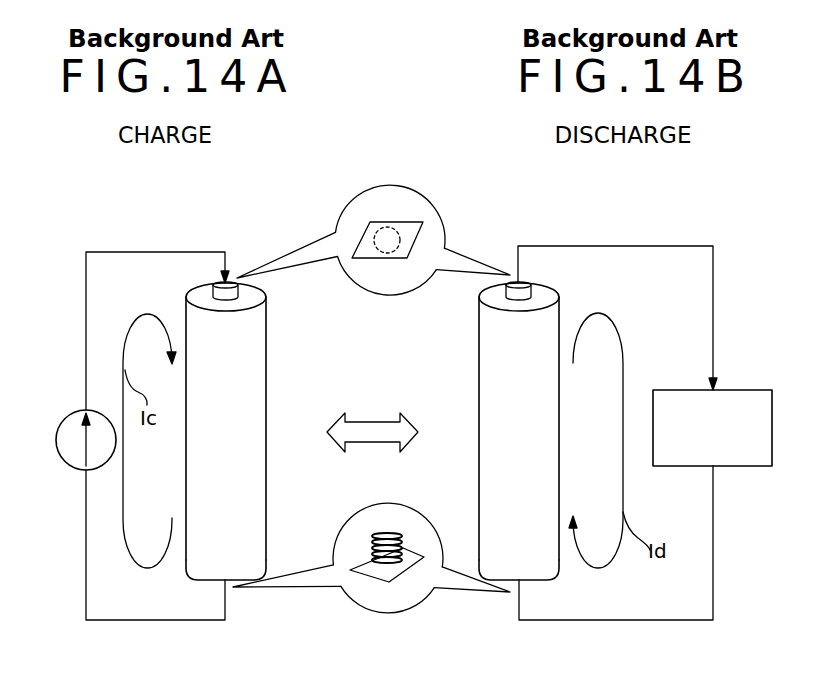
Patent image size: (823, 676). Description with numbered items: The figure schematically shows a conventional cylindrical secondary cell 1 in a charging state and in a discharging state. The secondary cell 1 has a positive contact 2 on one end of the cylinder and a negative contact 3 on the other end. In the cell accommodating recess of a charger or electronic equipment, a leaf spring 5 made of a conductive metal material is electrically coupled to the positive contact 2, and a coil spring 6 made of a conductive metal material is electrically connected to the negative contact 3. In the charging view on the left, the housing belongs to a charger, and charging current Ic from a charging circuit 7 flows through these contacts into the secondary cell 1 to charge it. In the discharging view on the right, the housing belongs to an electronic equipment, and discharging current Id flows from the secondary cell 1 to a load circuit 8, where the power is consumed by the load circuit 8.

In FIG. 14A, the secondary cell 1 is at (268, 375).
In FIG. 14B, the secondary cell 1 is at (490, 372).
In FIG. 14A, the positive contact 2 is at (240, 293).
In FIG. 14B, the positive contact 2 is at (531, 293).
In FIG. 14A, the negative contact 3 is at (198, 579).
In FIG. 14B, the negative contact 3 is at (545, 580).
In FIG. 14A, the leaf spring 5 is at (412, 228).
In FIG. 14A, the coil spring 6 is at (373, 568).
In FIG. 14A, the charging circuit 7 is at (57, 443).
In FIG. 14B, the load circuit 8 is at (742, 390).